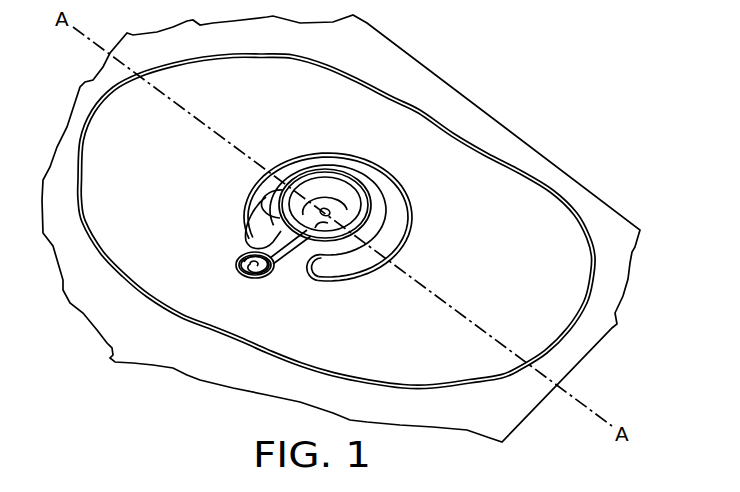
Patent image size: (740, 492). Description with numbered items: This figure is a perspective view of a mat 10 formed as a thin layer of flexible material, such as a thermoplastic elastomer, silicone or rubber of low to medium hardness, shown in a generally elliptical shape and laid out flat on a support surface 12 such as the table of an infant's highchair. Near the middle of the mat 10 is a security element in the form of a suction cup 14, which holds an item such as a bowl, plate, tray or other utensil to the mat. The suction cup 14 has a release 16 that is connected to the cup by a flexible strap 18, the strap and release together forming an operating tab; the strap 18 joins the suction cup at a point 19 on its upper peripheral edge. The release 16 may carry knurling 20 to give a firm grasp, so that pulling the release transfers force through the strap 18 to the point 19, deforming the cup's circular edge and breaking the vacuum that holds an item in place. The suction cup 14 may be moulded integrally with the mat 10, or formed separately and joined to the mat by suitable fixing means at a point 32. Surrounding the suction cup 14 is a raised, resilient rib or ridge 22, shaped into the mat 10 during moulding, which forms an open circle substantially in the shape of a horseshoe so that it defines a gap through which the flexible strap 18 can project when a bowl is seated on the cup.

The mat 10 is at (547, 223).
The support surface 12 is at (603, 318).
The suction cup 14 is at (343, 190).
The release 16 is at (240, 256).
The flexible strap 18 is at (263, 229).
The point on upper peripheral edge 19 is at (282, 200).
The knurling 20 is at (252, 277).
The ridge 22 is at (410, 199).
The fixing point 32 is at (316, 224).